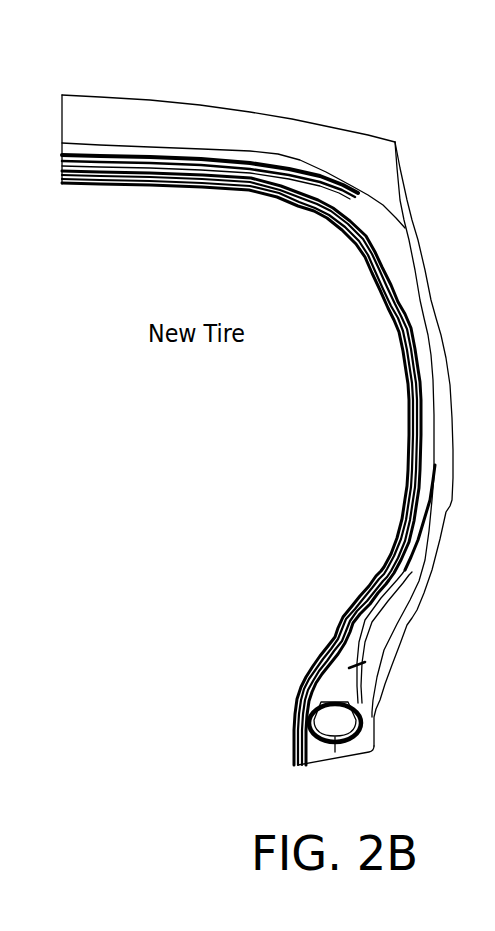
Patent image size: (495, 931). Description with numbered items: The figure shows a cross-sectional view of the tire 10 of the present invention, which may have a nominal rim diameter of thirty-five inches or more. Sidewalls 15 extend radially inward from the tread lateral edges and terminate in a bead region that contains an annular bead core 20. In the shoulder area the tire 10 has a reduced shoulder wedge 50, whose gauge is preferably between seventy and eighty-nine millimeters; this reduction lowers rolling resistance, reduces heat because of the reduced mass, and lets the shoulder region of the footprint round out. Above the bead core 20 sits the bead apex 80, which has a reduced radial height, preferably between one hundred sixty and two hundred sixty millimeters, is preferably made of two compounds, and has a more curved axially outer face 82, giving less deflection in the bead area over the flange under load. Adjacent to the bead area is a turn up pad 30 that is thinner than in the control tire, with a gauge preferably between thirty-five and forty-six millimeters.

The tire 10 is at (333, 110).
The sidewall 15 is at (425, 258).
The bead core 20 is at (370, 723).
The turn up pad 30 is at (390, 628).
The shoulder wedge 50 is at (387, 243).
The bead apex 80 is at (337, 687).
The axially outer face 82 is at (352, 667).